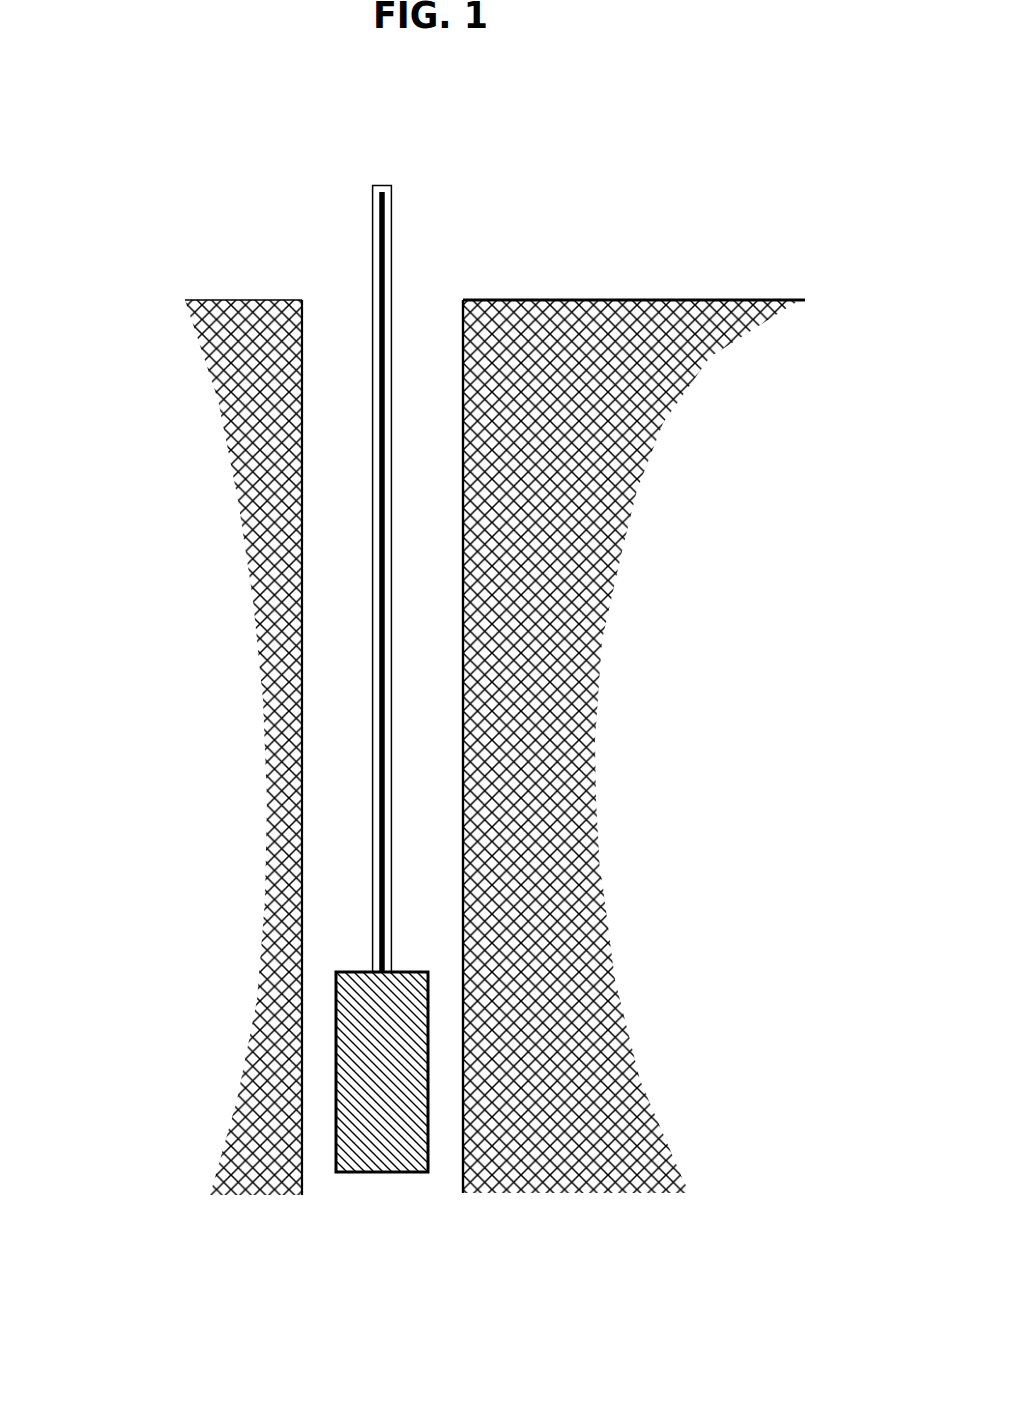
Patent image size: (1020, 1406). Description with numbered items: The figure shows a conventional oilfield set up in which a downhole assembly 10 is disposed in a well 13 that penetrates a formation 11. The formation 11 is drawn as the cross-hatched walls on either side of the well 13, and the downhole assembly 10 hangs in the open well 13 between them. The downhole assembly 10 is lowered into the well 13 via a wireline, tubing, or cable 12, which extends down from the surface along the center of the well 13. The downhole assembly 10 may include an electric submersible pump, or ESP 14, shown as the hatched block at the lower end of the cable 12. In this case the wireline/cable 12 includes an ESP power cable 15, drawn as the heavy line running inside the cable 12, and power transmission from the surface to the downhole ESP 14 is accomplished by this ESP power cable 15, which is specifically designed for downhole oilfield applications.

The downhole assembly 10 is at (350, 930).
The formation 11 is at (696, 779).
The wireline, tubing, or cable 12 is at (393, 237).
The well 13 is at (442, 653).
The electric submersible pump (ESP) 14 is at (395, 1155).
The ESP power cable 15 is at (380, 313).